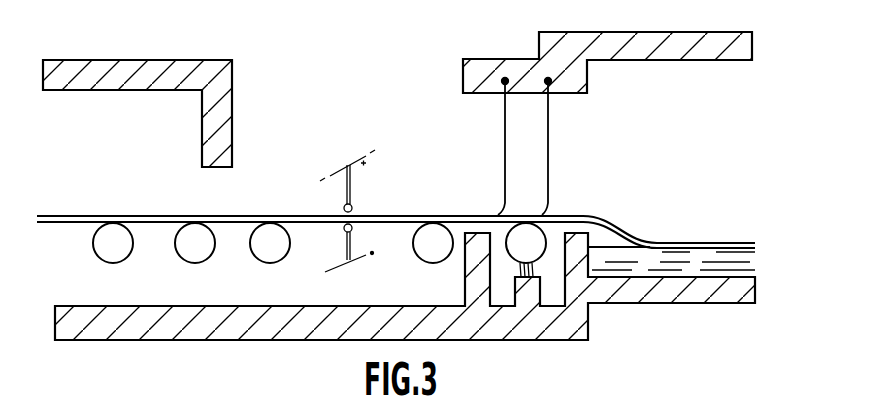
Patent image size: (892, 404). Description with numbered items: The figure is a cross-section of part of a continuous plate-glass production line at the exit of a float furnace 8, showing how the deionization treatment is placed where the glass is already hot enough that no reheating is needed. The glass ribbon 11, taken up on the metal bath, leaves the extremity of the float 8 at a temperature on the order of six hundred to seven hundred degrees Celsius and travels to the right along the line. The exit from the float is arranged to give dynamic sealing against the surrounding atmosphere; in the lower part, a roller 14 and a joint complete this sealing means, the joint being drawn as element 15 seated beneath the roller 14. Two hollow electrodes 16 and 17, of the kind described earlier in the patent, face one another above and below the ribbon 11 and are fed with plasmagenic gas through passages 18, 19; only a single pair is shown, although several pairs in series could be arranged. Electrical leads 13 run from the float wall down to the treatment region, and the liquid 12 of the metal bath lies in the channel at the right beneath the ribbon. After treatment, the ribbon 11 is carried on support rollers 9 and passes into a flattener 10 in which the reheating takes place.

The float furnace 8 is at (667, 108).
The support rollers 9 is at (264, 262).
The flattener 10 is at (146, 154).
The glass ribbon 11 is at (457, 216).
The liquid 12 is at (700, 254).
The electrical leads 13 is at (548, 147).
The roller 14 is at (534, 241).
The insulating support 15 is at (517, 272).
The hollow electrode 16 is at (353, 207).
The hollow electrode 17 is at (343, 230).
The passage 18 is at (355, 176).
The passage 19 is at (344, 263).